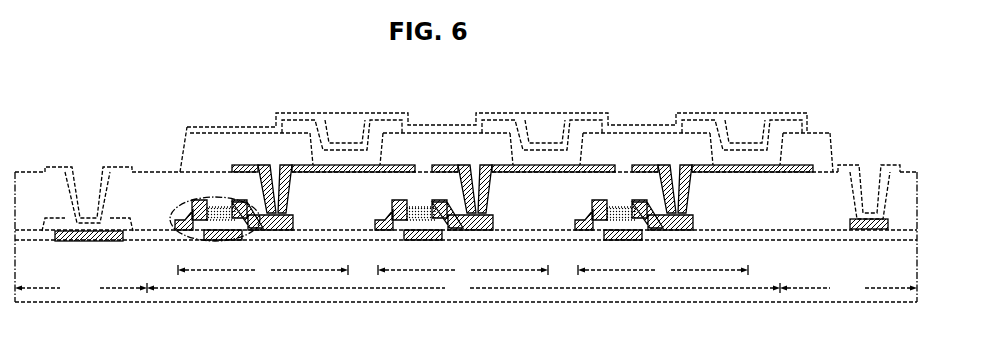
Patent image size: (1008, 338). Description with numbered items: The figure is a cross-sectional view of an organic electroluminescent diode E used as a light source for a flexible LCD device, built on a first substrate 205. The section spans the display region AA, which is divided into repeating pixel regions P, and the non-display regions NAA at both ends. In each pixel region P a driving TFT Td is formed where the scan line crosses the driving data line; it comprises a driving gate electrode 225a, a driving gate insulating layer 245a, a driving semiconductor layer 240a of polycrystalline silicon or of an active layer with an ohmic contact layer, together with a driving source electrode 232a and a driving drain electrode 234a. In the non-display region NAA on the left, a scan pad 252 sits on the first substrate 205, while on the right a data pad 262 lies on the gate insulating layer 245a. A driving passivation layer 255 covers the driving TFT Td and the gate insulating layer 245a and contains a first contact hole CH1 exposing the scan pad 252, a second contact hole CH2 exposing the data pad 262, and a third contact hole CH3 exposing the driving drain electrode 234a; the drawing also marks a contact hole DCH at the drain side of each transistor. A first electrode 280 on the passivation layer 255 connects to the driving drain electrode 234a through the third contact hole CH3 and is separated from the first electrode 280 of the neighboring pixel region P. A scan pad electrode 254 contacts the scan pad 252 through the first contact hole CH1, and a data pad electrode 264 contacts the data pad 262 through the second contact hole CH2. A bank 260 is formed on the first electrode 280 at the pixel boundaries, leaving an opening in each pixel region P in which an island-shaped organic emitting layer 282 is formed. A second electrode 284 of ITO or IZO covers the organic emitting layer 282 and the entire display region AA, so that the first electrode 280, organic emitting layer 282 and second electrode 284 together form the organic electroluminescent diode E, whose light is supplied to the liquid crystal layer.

The first substrate 205 is at (910, 284).
The driving gate electrode 225a is at (618, 241).
The driving source electrode 232a is at (602, 205).
The driving semiconductor layer 240a is at (628, 209).
The driving drain electrode 234a is at (688, 222).
The driving gate insulating layer 245a is at (763, 232).
The scan pad 252 is at (88, 242).
The scan pad electrode 254 is at (122, 167).
The driving passivation layer 255 is at (824, 183).
The bank 260 is at (816, 137).
The data pad 262 is at (877, 230).
The data pad electrode 264 is at (888, 166).
The first electrode 280 is at (725, 142).
The organic emitting layer 282 is at (743, 149).
The second electrode 284 is at (762, 146).
The organic electroluminescent diode E is at (763, 73).
The first contact hole CH1 is at (89, 166).
The second contact hole CH2 is at (869, 171).
The third contact hole CH3 is at (282, 172).
The drain contact hole DCH is at (680, 173).
The driving TFT Td is at (210, 248).
The pixel region P is at (463, 270).
The non-active area NAA is at (466, 288).
The display region AA is at (463, 288).